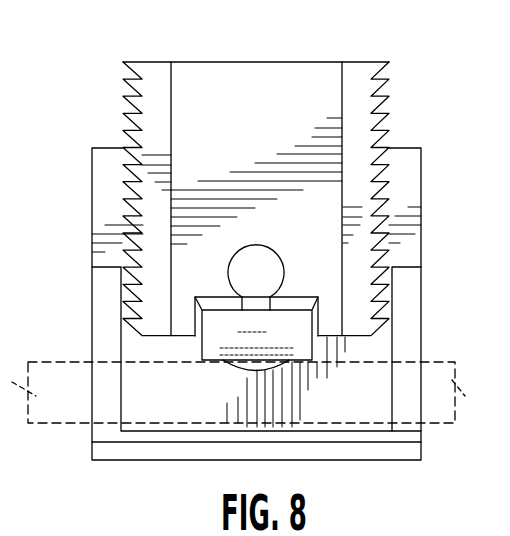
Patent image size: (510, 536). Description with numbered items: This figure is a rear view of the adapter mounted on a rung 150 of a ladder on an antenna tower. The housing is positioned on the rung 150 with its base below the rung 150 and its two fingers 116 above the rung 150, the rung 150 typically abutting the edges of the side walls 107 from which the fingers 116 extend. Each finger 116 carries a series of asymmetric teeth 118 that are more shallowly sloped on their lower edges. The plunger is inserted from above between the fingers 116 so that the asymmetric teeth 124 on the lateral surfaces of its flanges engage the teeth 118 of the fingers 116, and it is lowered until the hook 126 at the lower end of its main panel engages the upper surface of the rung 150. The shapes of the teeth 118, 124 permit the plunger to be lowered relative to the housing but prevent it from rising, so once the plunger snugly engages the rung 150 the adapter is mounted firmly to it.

The side walls 107 is at (402, 315).
The fingers 116 is at (112, 183).
The asymmetric teeth 118 is at (134, 168).
The asymmetric teeth 124 is at (170, 131).
The hook 126 is at (220, 339).
The rung 150 is at (28, 425).